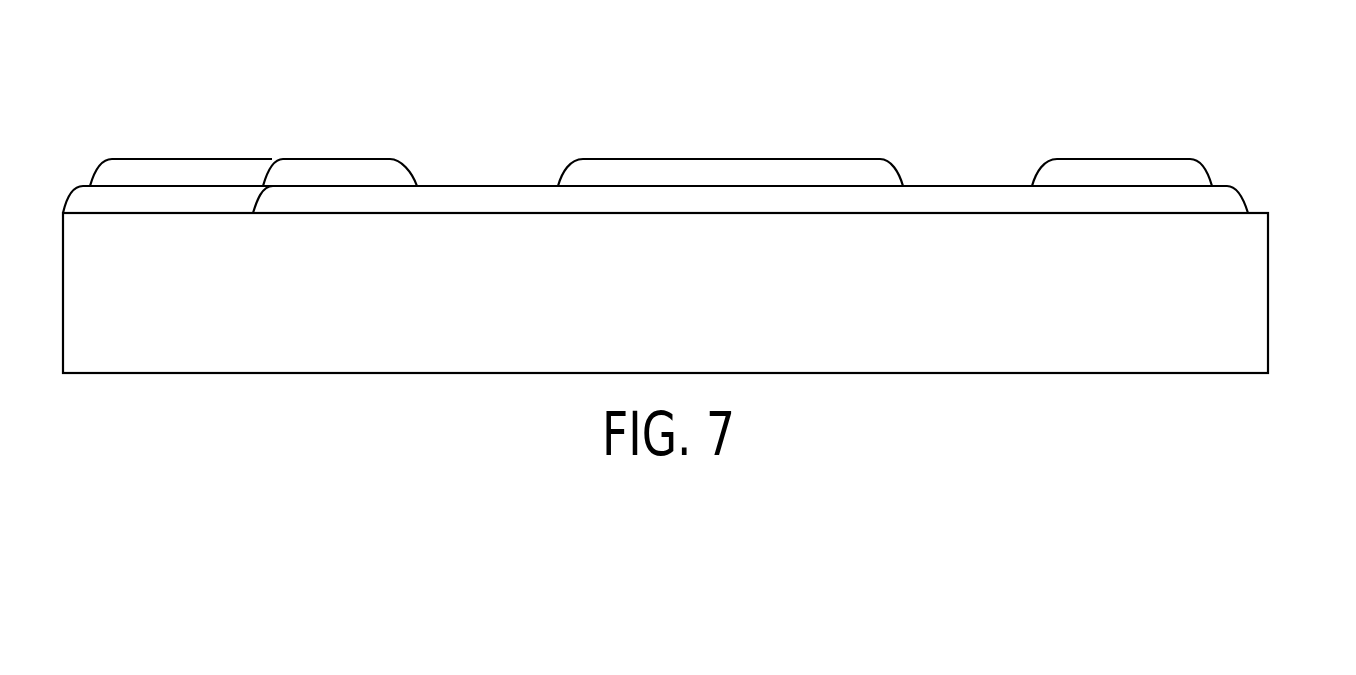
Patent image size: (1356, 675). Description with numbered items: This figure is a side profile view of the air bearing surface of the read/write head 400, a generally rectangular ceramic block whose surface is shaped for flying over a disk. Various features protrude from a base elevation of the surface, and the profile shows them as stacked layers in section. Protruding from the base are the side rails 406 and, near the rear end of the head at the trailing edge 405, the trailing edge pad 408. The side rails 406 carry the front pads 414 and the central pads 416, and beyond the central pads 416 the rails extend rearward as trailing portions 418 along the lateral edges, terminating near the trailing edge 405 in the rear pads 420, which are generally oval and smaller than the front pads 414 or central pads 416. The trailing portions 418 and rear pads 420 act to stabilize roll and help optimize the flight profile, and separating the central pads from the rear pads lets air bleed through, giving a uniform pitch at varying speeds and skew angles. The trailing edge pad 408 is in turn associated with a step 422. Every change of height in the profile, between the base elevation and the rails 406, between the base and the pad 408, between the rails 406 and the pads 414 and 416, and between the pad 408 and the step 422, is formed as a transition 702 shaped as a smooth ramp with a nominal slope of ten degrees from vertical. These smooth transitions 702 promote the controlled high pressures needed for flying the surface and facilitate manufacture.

The read/write head 400 is at (1274, 110).
The trailing edge 405 is at (1268, 278).
The trailing edge pad 408 is at (92, 182).
The trailing portions 418 is at (480, 185).
The step 422 is at (175, 157).
The rear pads 420 is at (328, 157).
The central pads 416 is at (708, 158).
The front pads 414 is at (1132, 157).
The side rails 406 is at (977, 185).
The transitions 702 is at (415, 180).